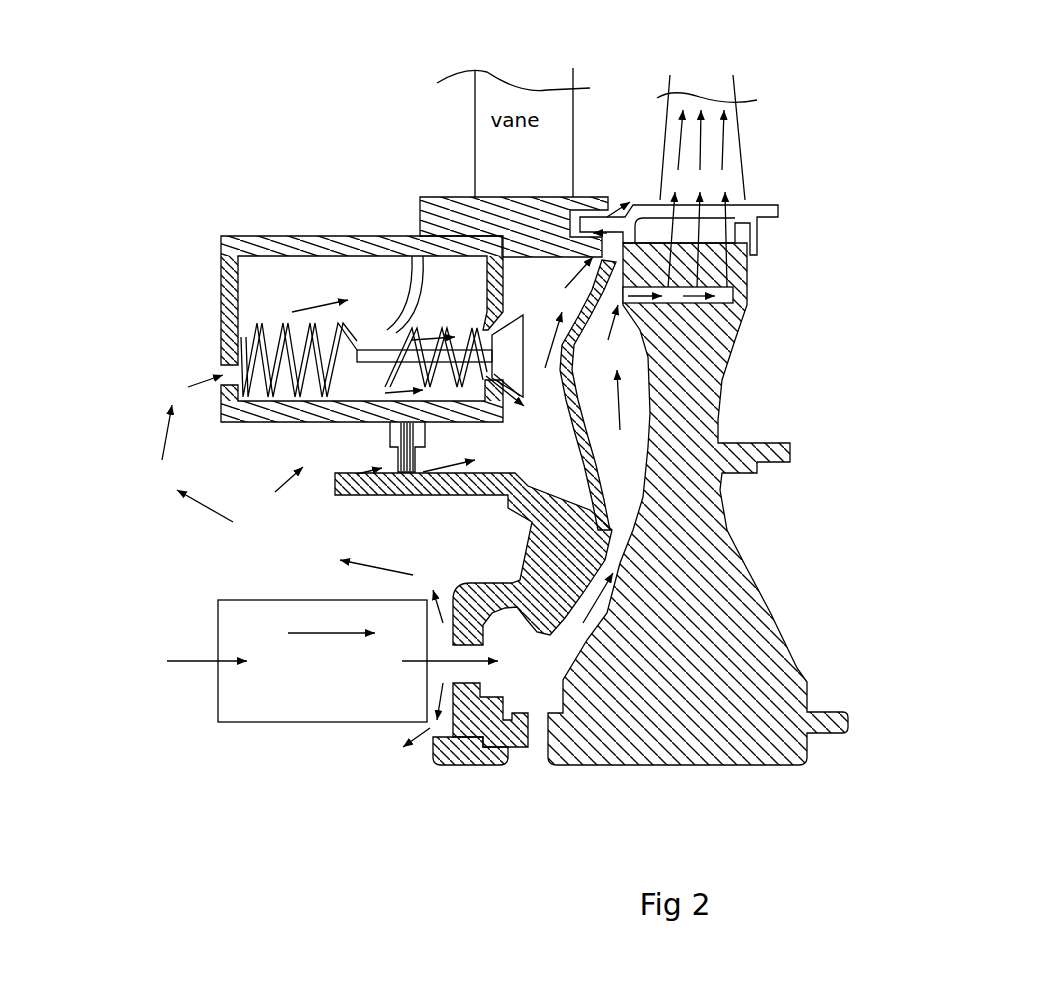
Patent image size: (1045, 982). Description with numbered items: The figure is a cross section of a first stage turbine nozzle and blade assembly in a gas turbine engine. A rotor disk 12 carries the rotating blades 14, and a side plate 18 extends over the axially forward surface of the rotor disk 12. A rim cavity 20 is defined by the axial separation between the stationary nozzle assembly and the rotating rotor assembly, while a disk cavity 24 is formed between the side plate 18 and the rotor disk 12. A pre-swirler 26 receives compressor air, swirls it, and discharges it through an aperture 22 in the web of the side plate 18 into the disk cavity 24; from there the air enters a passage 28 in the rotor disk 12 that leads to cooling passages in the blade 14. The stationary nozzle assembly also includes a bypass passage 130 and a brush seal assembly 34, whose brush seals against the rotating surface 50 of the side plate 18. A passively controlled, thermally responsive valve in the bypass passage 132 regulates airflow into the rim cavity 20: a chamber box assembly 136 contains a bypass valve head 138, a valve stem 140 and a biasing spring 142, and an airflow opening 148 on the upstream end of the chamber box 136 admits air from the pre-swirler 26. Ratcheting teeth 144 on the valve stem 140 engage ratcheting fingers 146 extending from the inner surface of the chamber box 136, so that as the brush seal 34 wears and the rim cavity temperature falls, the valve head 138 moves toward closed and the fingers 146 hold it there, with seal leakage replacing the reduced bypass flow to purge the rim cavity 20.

The rotor disk 12 is at (713, 583).
The blade 14 is at (735, 148).
The side plate 18 is at (580, 413).
The rim cavity 20 is at (558, 296).
The aperture 22 is at (460, 667).
The disk cavity 24 is at (633, 471).
The pre-swirler 26 is at (233, 630).
The passage 28 is at (728, 296).
The brush seal assembly 34 is at (393, 457).
The rotating surface 50 is at (335, 490).
The bypass passage 130 is at (307, 115).
The bypass passage 132 is at (478, 328).
The chamber box assembly 136 is at (233, 240).
The bypass valve head 138 is at (508, 353).
The valve stem 140 is at (355, 347).
The biasing spring 142 is at (243, 337).
The ratcheting teeth 144 is at (393, 333).
The ratcheting fingers 146 is at (405, 333).
The airflow opening 148 is at (223, 367).